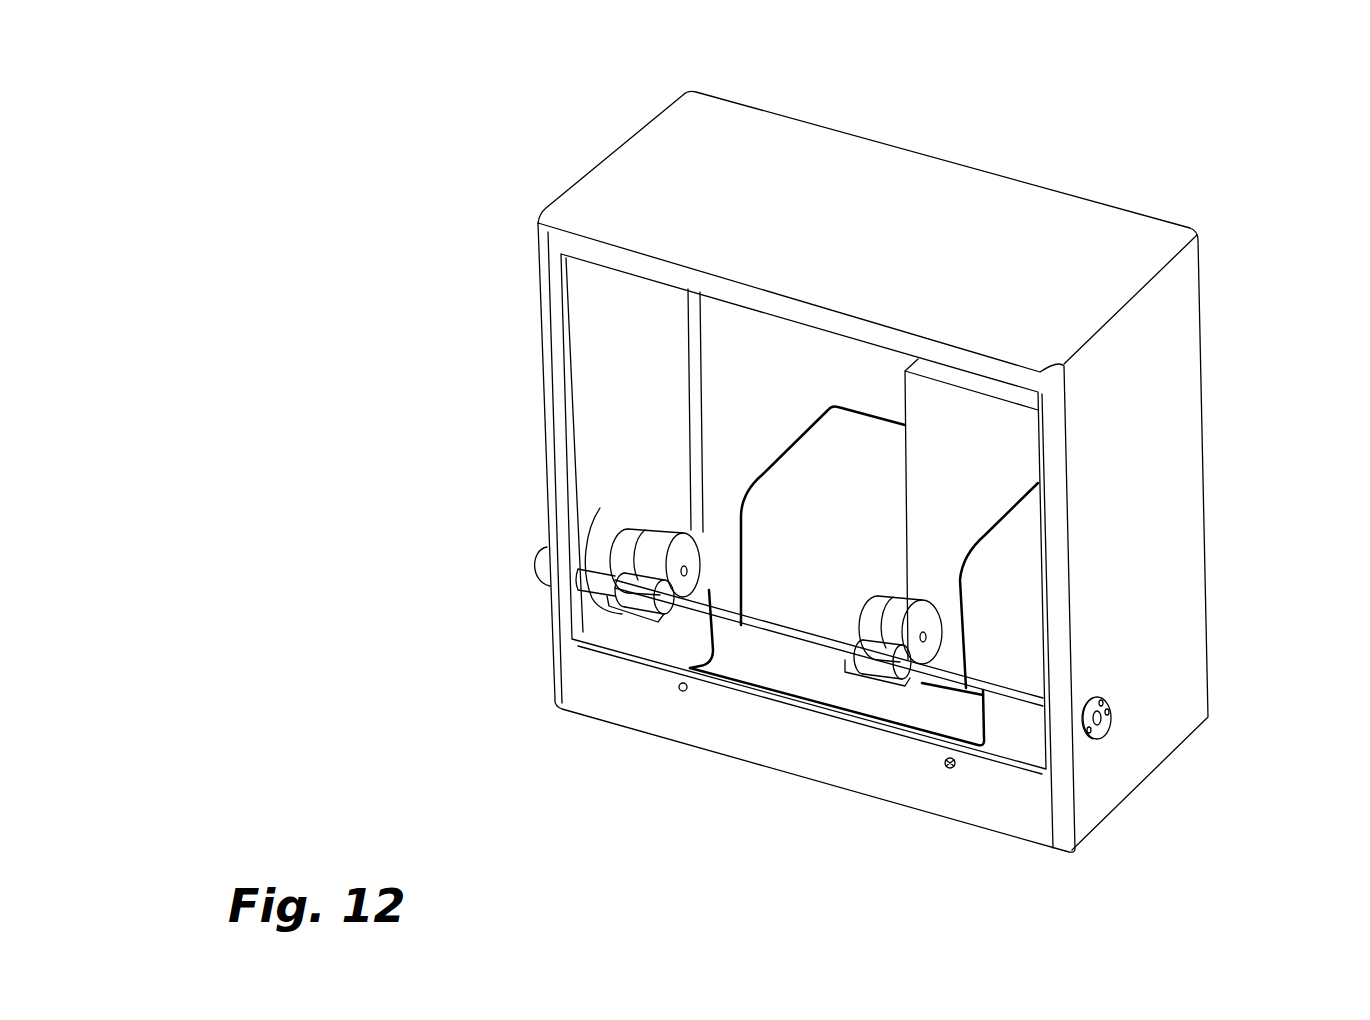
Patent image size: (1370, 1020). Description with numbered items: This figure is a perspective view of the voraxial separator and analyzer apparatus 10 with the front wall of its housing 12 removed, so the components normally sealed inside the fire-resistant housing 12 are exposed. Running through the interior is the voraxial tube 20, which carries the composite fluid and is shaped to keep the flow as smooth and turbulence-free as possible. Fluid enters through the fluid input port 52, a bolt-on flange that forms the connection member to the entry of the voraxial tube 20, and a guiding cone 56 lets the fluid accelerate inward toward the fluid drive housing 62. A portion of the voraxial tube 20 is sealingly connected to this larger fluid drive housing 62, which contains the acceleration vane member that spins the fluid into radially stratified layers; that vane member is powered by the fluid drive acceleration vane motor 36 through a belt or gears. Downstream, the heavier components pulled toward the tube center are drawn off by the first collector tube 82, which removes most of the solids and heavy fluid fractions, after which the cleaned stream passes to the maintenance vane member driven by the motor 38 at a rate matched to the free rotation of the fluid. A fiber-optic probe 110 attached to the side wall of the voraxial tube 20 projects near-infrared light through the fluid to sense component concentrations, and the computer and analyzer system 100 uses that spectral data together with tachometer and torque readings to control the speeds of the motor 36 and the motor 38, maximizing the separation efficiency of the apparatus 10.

The voraxial separator and analyzer apparatus 10 is at (1232, 149).
The housing 12 is at (812, 155).
The voraxial tube 20 is at (628, 548).
The fluid drive acceleration vane motor 36 is at (652, 535).
The motor 38 is at (892, 608).
The fluid input port 52 is at (533, 550).
The guiding cone 56 is at (590, 619).
The fluid drive housing 62 is at (620, 613).
The first collector tube 82 is at (722, 668).
The computer and analyzer system 100 is at (778, 466).
The fiber-optic probe 110 is at (1010, 522).